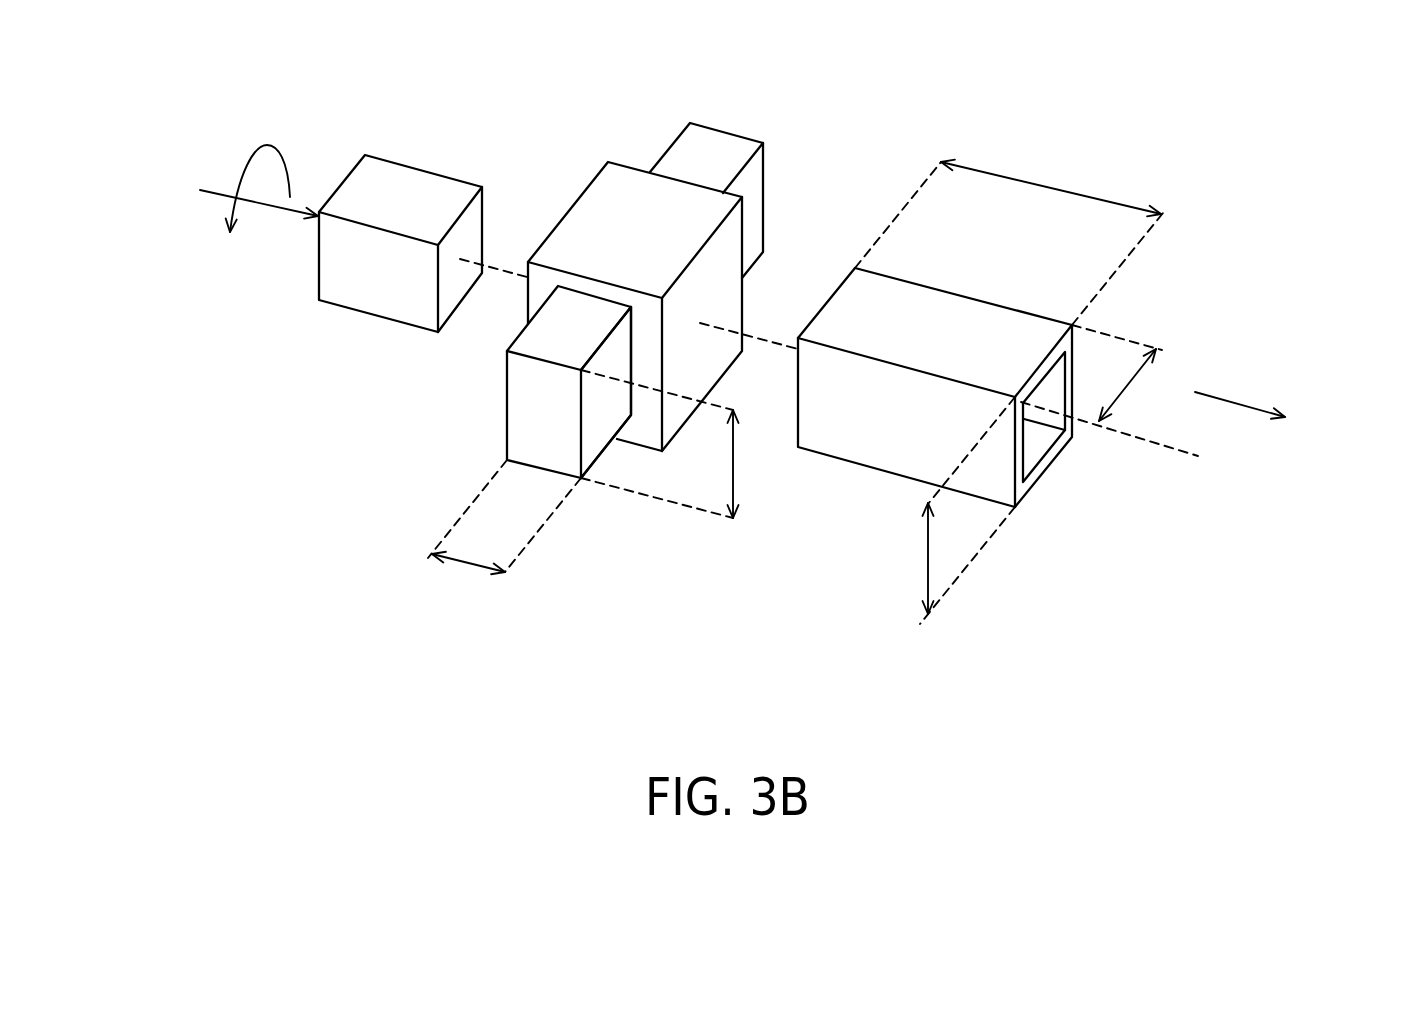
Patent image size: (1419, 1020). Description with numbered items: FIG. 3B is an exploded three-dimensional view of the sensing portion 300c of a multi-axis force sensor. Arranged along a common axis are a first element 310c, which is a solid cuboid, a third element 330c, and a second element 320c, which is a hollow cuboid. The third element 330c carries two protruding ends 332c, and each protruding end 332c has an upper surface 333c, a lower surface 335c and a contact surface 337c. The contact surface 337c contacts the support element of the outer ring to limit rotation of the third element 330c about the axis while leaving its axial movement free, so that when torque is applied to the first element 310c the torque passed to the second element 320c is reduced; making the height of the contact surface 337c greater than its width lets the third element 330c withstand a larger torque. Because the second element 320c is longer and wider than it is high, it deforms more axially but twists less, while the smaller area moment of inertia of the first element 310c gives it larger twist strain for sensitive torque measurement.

The sensing portion 300c is at (750, 367).
The first element 310c is at (405, 184).
The second element 320c is at (977, 317).
The third element 330c is at (618, 182).
The protruding end 332c is at (727, 132).
The upper surface 333c is at (604, 457).
The lower surface 335c is at (610, 448).
The contact surface 337c is at (552, 420).